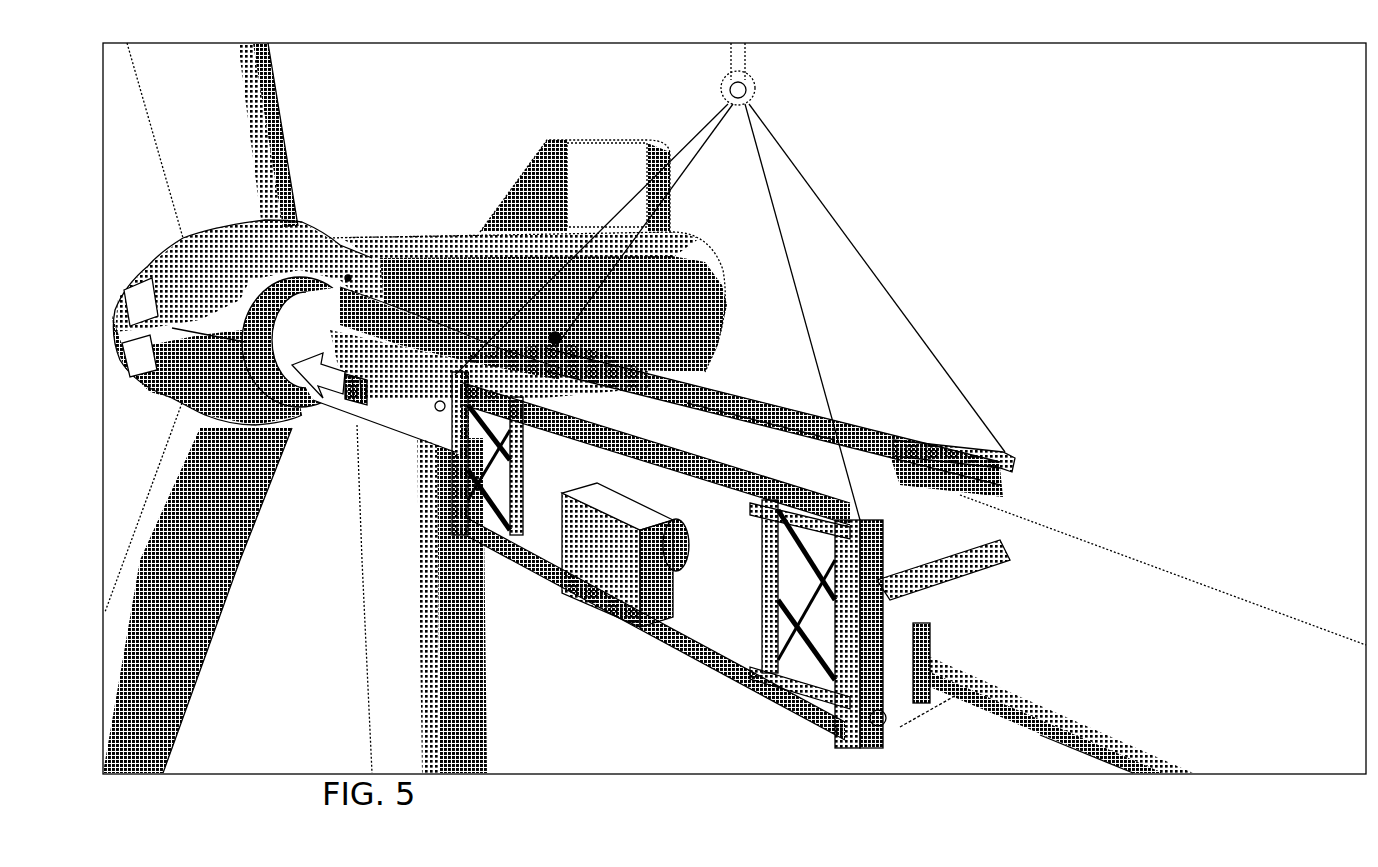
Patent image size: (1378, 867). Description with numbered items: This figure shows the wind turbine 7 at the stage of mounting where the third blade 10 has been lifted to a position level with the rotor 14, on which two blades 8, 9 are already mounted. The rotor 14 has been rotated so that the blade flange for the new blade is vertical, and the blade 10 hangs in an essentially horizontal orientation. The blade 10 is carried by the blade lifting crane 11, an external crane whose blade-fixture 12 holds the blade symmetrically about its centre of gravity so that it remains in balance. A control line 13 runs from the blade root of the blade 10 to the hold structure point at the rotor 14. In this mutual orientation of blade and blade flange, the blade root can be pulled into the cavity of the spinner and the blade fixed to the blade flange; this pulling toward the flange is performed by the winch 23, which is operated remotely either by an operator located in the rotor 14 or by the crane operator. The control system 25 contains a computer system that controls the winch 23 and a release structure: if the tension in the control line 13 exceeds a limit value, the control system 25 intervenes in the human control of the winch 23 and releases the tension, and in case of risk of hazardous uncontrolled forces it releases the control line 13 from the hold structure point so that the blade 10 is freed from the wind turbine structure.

The wind turbine 7 is at (370, 673).
The blade 8 is at (182, 175).
The blade 9 is at (178, 463).
The third blade 10 is at (1068, 545).
The blade lifting crane 11 is at (745, 62).
The blade-fixture 12 is at (865, 730).
The control line 13 is at (433, 308).
The rotor 14 is at (310, 245).
The winch 23 is at (577, 336).
The control system 25 is at (660, 593).